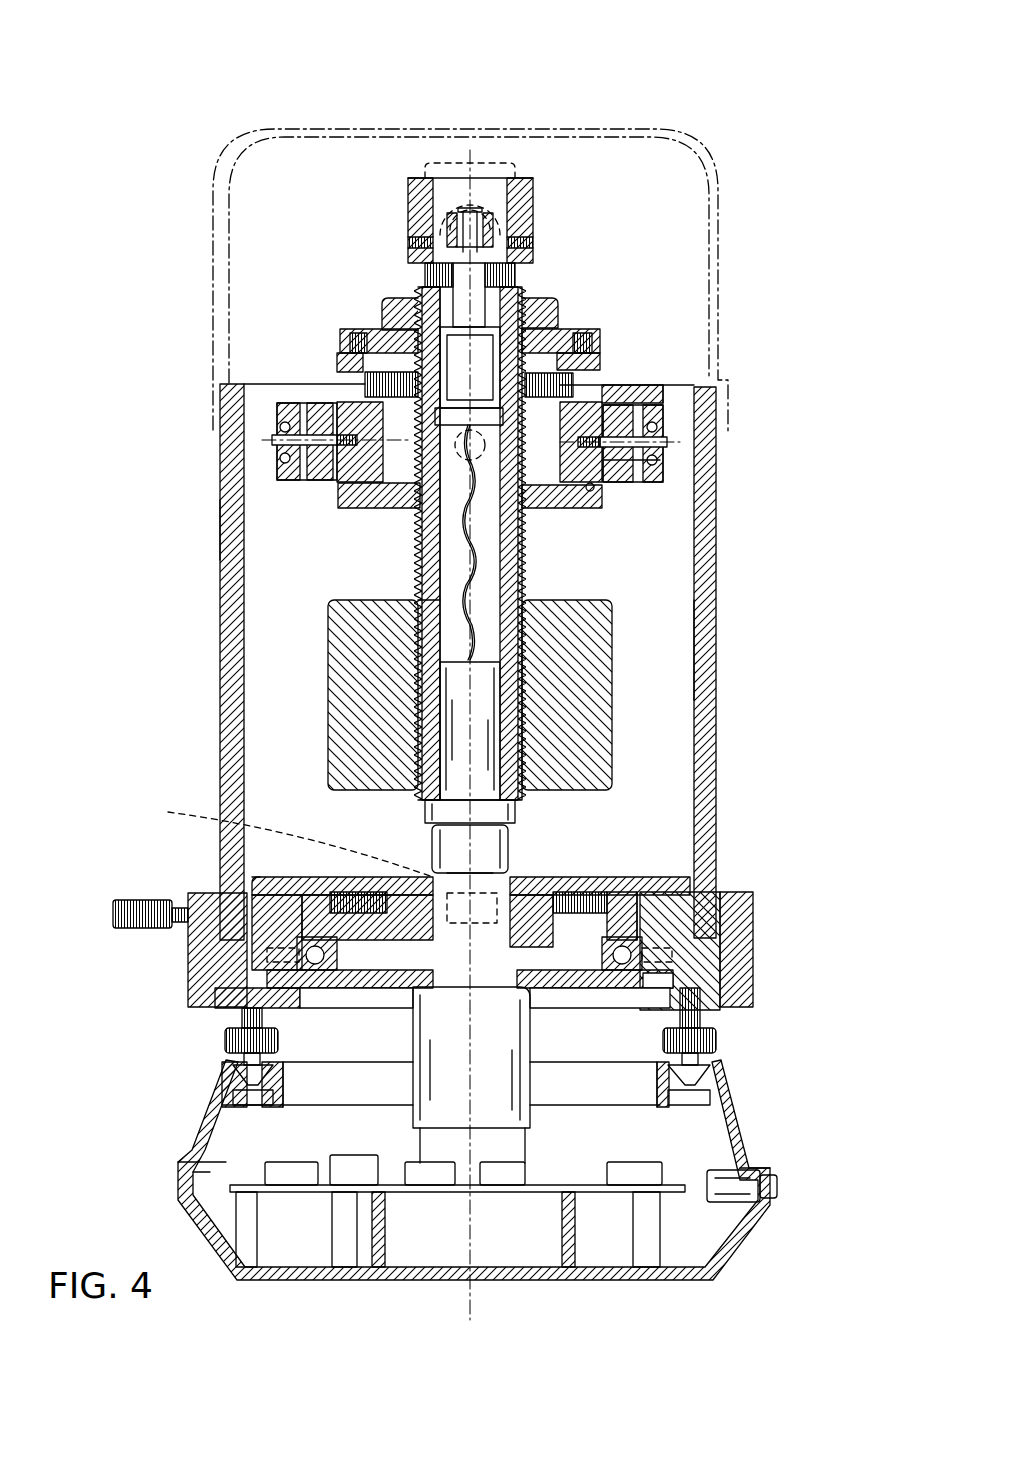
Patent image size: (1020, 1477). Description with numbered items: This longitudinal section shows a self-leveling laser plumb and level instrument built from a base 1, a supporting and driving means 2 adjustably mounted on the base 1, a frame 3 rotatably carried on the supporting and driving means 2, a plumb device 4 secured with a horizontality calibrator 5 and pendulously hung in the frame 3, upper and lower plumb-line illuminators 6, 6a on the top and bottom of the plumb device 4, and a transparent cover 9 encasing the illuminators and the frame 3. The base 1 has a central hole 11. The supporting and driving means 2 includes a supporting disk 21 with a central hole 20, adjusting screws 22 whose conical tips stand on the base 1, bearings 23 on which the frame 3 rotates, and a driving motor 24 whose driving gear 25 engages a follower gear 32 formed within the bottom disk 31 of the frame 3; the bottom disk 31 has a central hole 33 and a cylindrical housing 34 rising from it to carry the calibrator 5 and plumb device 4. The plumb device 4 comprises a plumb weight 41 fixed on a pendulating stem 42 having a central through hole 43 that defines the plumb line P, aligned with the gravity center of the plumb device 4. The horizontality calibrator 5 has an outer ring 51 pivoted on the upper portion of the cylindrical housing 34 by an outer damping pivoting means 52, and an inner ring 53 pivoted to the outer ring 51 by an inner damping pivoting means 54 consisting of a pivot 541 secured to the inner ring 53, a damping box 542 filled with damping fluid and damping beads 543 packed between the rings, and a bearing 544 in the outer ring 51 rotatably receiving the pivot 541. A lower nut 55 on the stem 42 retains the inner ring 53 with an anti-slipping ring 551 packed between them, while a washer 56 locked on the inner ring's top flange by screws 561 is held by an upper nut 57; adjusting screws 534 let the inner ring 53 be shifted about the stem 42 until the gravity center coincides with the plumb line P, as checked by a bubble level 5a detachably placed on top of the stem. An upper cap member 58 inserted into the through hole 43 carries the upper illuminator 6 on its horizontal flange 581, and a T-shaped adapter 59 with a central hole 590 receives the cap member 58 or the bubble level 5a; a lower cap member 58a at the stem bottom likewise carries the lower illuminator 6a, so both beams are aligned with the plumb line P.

The base 1 is at (747, 1128).
The supporting and driving means 2 is at (716, 1040).
The frame 3 is at (720, 762).
The plumb device 4 is at (620, 630).
The horizontality calibrator 5 is at (672, 396).
The bubble level 5a is at (428, 150).
The upper plumb-line illuminator 6 is at (470, 195).
The lower plumb-line illuminator 6a is at (505, 852).
The transparent cover 9 is at (724, 212).
The central hole 11 is at (560, 1283).
The central hole 20 is at (512, 987).
The supporting disk 21 is at (672, 980).
The adjusting screws 22 is at (225, 1040).
The bearings 23 is at (245, 982).
The driving motor 24 is at (430, 1065).
The driving gear 25 is at (280, 836).
The bottom disk 31 is at (700, 905).
The follower gear 32 is at (330, 884).
The central hole 33 is at (560, 888).
The cylindrical housing 34 is at (716, 645).
The plumb weight 41 is at (606, 750).
The pendulating stem 42 is at (527, 592).
The central through hole 43 is at (445, 567).
The outer ring 51 is at (278, 478).
The outer damping pivoting means 52 is at (342, 458).
The inner ring 53 is at (598, 402).
The inner damping pivoting means 54 is at (340, 380).
The lower nut 55 is at (565, 502).
The washer 56 is at (380, 322).
The upper nut 57 is at (548, 300).
The upper cap member 58 is at (520, 292).
The lower cap member 58a is at (492, 742).
The T-shaped adapter 59 is at (412, 195).
The adjusting screws 534 is at (362, 376).
The pivot 541 is at (667, 445).
The damping box 542 is at (655, 405).
The damping beads 543 is at (246, 530).
The bearing 544 is at (665, 458).
The anti-slipping ring 551 is at (596, 490).
The screws 561 is at (586, 334).
The horizontal flange 581 is at (517, 808).
The central hole 590 is at (455, 195).
The plumb line P is at (510, 852).